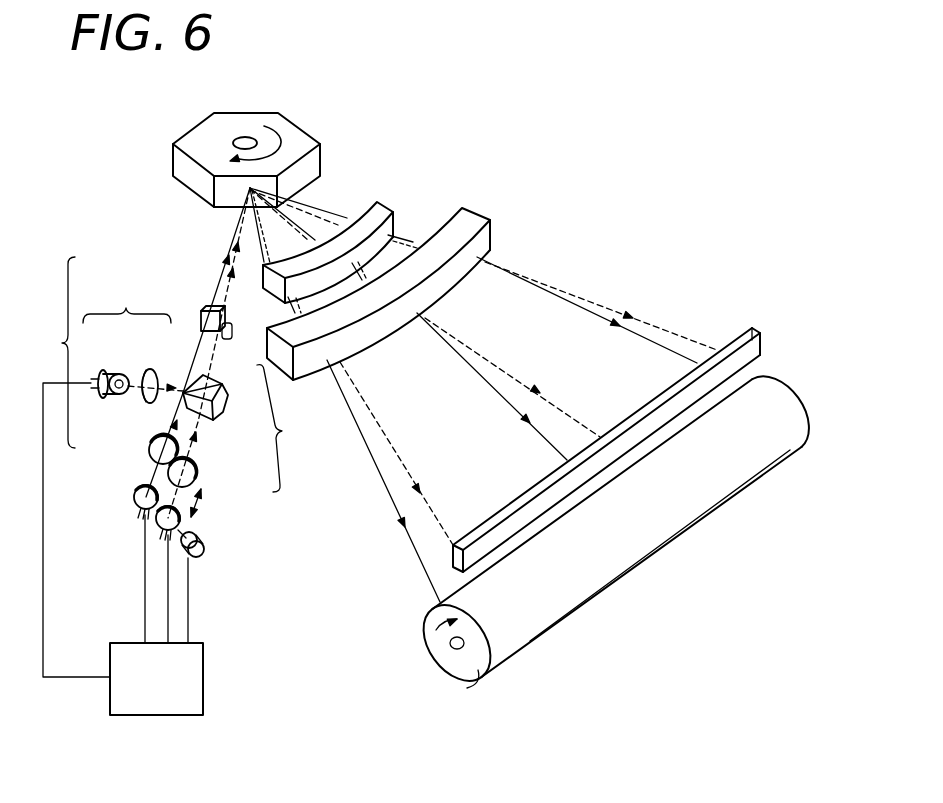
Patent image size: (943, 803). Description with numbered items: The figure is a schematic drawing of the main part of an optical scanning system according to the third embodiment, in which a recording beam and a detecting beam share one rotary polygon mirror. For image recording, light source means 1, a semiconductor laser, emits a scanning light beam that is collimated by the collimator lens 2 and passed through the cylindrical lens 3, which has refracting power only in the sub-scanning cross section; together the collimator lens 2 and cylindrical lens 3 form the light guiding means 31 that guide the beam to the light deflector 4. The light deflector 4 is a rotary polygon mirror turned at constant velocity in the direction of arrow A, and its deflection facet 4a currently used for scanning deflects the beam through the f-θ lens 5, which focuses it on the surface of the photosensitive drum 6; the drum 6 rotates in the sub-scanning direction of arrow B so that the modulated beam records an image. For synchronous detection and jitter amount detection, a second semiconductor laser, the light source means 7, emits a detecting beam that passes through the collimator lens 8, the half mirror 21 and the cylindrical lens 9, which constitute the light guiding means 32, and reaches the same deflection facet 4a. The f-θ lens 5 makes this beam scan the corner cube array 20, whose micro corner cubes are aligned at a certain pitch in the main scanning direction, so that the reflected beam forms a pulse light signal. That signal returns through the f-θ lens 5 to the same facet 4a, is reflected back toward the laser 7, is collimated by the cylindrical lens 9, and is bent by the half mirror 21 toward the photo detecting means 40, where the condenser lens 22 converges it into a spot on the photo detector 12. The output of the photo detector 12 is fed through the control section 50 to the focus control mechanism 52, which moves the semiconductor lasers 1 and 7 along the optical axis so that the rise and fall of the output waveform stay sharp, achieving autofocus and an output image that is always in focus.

The light source means for image recording 1 is at (133, 500).
The collimator lens 2 is at (150, 440).
The cylindrical lens 3 is at (204, 309).
The light deflector 4 is at (198, 133).
The deflection facet 4a is at (266, 180).
The f-θ lens 5 is at (486, 199).
The photosensitive drum 6 is at (790, 400).
The light source means for synchronous detection 7 is at (182, 525).
The collimator lens 8 is at (198, 468).
The cylindrical lens 9 is at (231, 340).
The photo detector 12 is at (104, 369).
The corner cube array 20 is at (760, 332).
The half mirror 21 is at (218, 414).
The condenser lens 22 is at (150, 369).
The light guiding means for image recording 31 is at (56, 352).
The light guiding means for synchronous detection 32 is at (283, 428).
The photo detecting means 40 is at (127, 304).
The control section 50 is at (203, 675).
The focus control mechanism 52 is at (201, 552).
The direction of rotation of light deflector A is at (268, 131).
The direction of rotation of photosensitive drum B is at (490, 665).